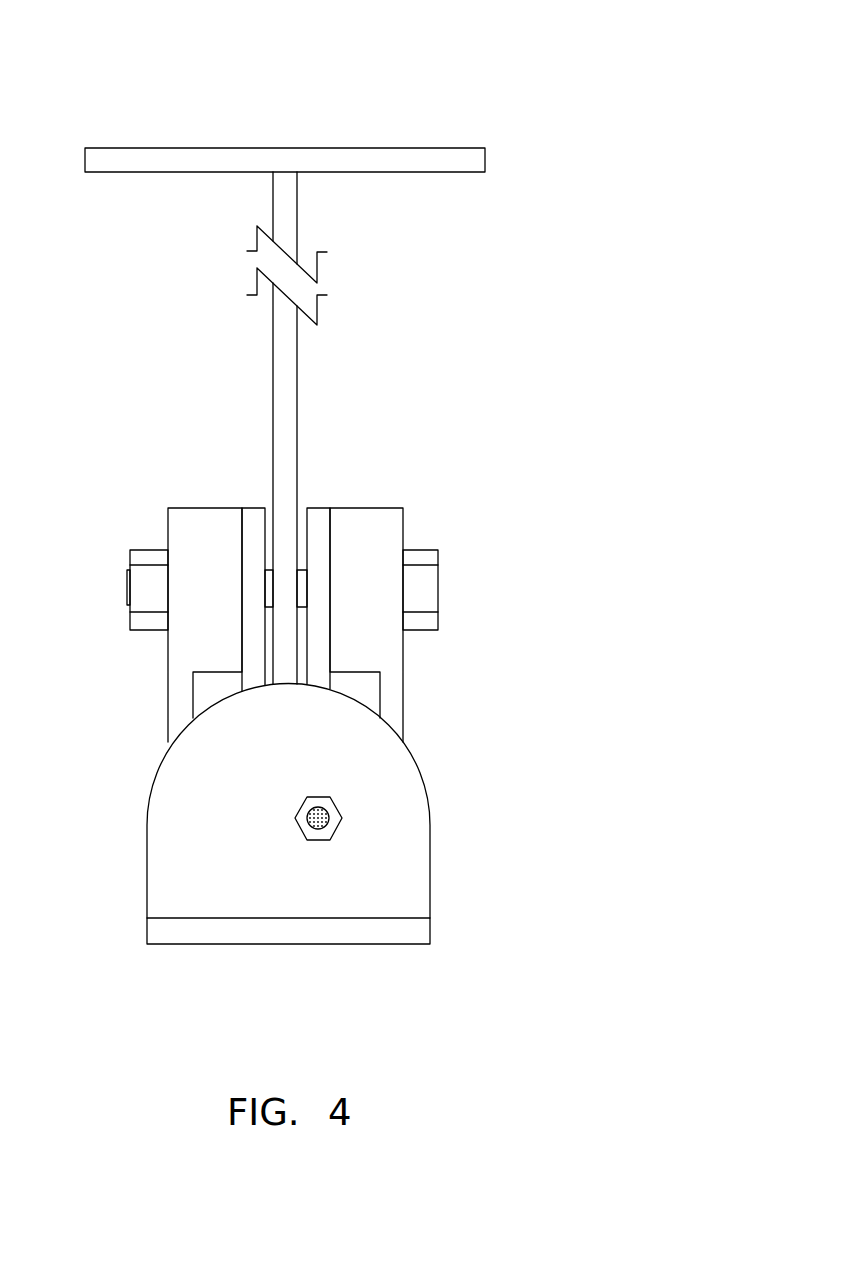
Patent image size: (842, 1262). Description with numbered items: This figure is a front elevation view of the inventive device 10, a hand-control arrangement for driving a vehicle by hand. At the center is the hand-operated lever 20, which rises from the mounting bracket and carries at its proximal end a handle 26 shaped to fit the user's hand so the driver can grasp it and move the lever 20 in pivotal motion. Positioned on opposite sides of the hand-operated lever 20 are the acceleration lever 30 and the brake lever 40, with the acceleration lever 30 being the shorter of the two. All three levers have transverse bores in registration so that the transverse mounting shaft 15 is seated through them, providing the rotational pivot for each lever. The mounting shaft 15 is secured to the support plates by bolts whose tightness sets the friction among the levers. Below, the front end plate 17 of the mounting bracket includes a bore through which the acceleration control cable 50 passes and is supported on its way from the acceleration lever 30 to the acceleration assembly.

The inventive device 10 is at (456, 64).
The handle 26 is at (333, 160).
The hand-operated lever 20 is at (290, 427).
The brake lever 40 is at (250, 517).
The acceleration lever 30 is at (318, 520).
The mounting shaft 15 is at (300, 568).
The front end plate 17 is at (400, 870).
The acceleration control cable 50 is at (307, 814).